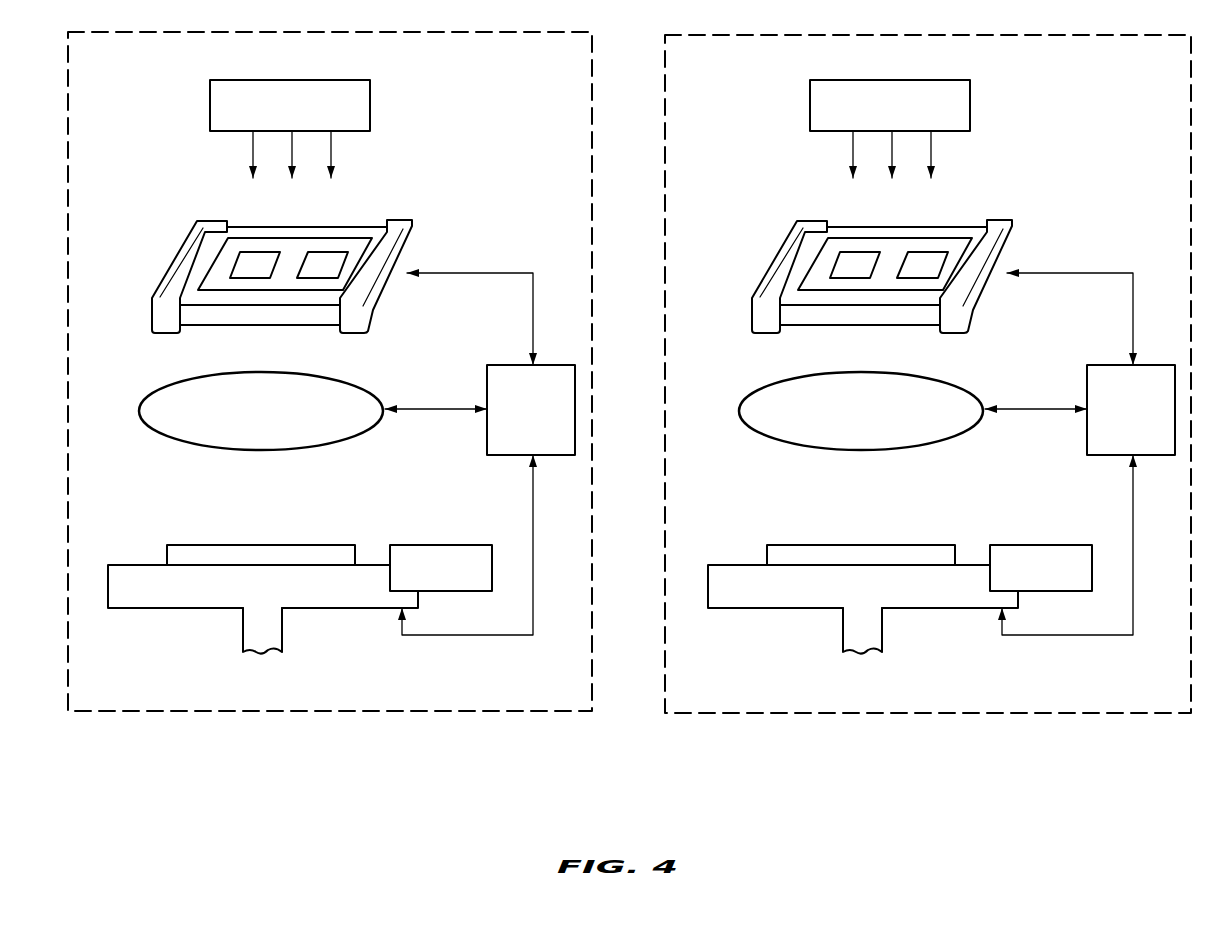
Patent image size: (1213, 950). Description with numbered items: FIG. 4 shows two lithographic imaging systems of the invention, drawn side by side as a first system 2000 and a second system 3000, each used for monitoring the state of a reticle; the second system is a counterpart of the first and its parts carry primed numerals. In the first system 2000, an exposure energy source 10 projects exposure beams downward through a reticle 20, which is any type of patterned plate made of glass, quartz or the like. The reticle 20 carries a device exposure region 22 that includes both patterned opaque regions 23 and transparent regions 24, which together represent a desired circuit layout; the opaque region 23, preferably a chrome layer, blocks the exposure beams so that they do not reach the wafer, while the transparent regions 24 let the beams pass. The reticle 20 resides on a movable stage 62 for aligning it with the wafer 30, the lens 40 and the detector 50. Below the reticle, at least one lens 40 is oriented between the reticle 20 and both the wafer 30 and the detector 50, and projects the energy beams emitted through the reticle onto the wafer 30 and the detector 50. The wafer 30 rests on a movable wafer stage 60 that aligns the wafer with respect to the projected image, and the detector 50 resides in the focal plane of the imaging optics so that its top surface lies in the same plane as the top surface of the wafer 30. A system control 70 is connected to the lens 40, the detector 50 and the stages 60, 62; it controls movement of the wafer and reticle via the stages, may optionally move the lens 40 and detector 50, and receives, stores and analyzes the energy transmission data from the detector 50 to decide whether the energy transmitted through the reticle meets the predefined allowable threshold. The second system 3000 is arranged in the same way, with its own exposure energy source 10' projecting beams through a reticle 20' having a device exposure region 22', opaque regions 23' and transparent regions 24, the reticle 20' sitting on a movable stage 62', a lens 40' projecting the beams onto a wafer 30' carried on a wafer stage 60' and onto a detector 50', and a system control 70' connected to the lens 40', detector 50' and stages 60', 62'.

The exposure energy source 10 is at (290, 129).
The exposure energy source 10' is at (890, 129).
The reticle 20 is at (252, 294).
The reticle 20' is at (852, 294).
The device exposure region 22 is at (257, 228).
The device exposure region 22' is at (857, 228).
The opaque region 23 is at (299, 219).
The opaque region 23' is at (902, 219).
The transparent region 24 is at (266, 274).
The wafer 30 is at (224, 542).
The wafer 30' is at (824, 542).
The lens 40 is at (261, 411).
The lens 40' is at (861, 411).
The detector 50 is at (441, 568).
The detector 50' is at (1041, 568).
The wafer stage 60 is at (227, 631).
The wafer stage 60' is at (827, 631).
The movable stage 62 is at (297, 267).
The movable stage 62' is at (901, 267).
The system control 70 is at (480, 454).
The system control 70' is at (1080, 454).
The system 2000 is at (489, 703).
The system 3000 is at (928, 394).